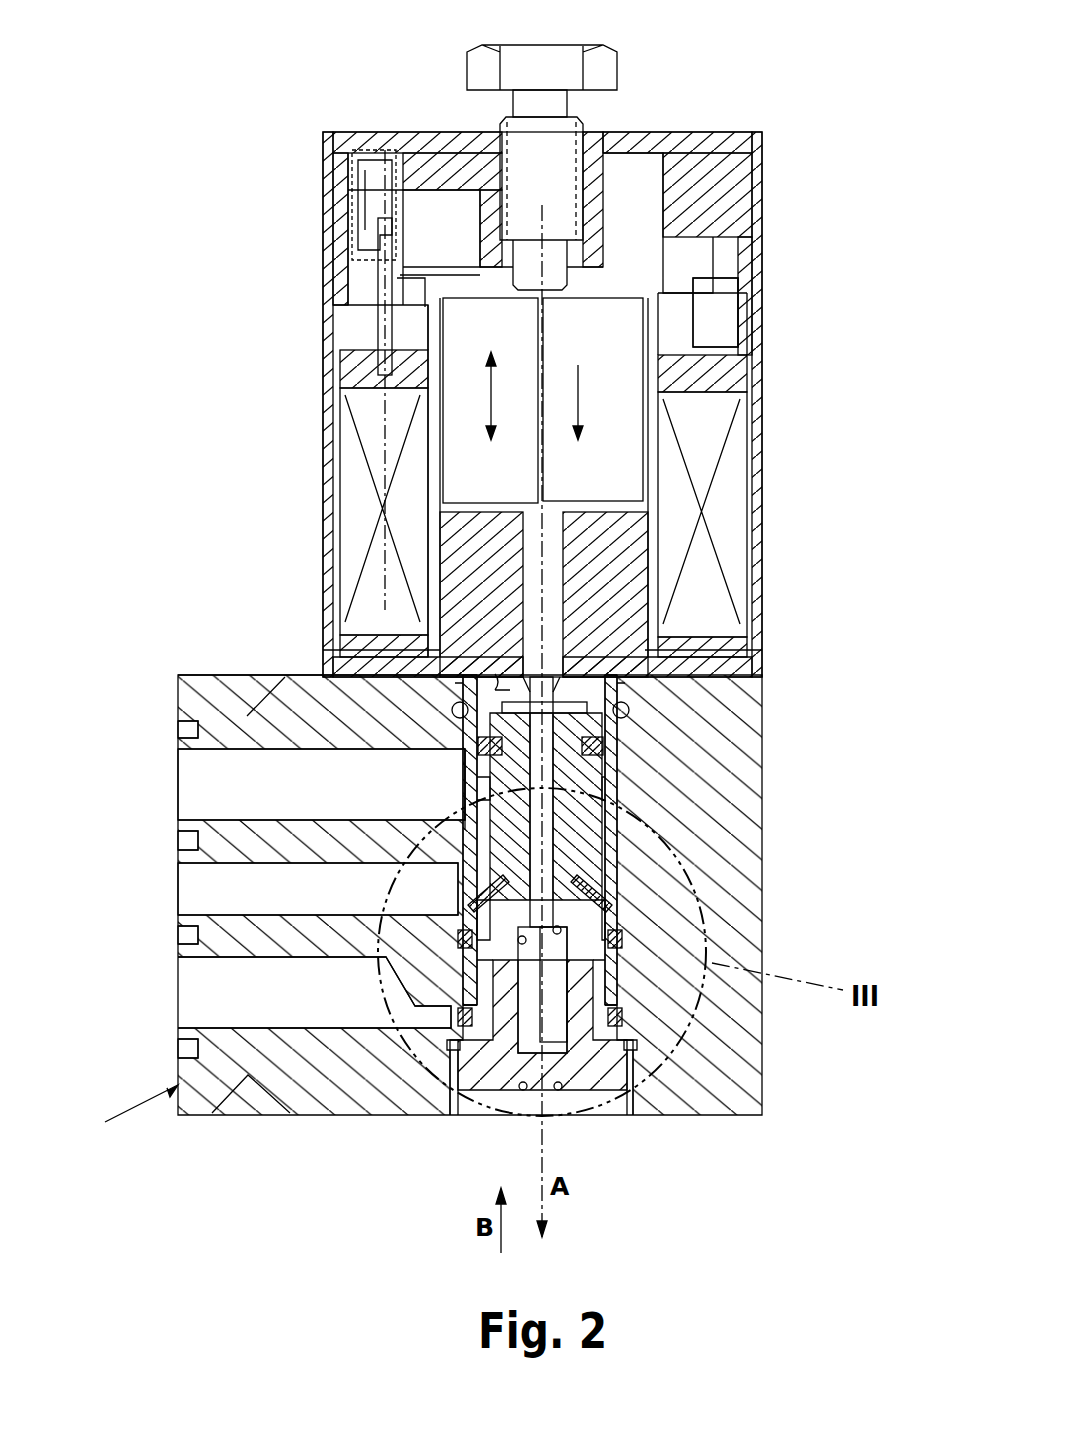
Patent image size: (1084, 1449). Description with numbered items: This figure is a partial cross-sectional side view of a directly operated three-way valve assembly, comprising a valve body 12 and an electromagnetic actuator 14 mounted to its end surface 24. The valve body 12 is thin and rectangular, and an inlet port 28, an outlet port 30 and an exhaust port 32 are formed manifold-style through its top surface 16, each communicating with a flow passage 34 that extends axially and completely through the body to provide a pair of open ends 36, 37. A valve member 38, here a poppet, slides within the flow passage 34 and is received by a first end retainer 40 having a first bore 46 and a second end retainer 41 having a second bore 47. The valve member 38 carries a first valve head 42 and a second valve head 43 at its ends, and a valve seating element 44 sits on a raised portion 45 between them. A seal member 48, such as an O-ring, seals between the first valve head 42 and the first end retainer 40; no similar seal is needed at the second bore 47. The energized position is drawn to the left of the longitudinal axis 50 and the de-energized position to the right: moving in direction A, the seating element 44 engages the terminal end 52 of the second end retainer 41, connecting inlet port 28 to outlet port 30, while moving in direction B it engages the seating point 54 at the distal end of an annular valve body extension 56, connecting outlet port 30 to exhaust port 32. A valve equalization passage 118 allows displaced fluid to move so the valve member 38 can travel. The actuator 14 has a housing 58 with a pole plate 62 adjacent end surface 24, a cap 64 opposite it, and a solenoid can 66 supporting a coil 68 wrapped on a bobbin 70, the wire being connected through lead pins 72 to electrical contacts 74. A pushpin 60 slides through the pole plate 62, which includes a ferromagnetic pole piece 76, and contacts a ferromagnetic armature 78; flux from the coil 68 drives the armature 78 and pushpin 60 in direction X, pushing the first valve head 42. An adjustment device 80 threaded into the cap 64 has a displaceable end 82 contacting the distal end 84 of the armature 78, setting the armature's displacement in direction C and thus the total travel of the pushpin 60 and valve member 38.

The adjustment device 80 is at (607, 65).
The displaceable end 82 is at (551, 262).
The distal end 84 is at (597, 320).
The lead pins 72 is at (360, 170).
The armature 78 is at (745, 182).
The cap 64 is at (748, 213).
The housing 58 is at (745, 262).
The electrical contacts 74 is at (380, 287).
The bobbin 70 is at (735, 372).
The coil 68 is at (700, 448).
The solenoid can 66 is at (760, 497).
The pole piece 76 is at (625, 590).
The electromagnetic actuator 14 is at (778, 606).
The open end 36 is at (497, 690).
The flow passage 34 is at (362, 700).
The end surface 24 is at (292, 675).
The pole plate 62 is at (745, 662).
The pushpin 60 is at (620, 683).
The seating point 54 is at (464, 805).
The valve equalization passage 118 is at (632, 712).
The seal member 48 is at (604, 742).
The inlet port 28 is at (188, 776).
The first end retainer 40 is at (575, 765).
The first bore 46 is at (606, 820).
The first valve head 42 is at (580, 840).
The valve member 38 is at (615, 855).
The outlet port 30 is at (188, 877).
The annular valve body extension 56 is at (600, 880).
The raised portion 45 is at (606, 906).
The exhaust port 32 is at (188, 983).
The second bore 47 is at (622, 1016).
The top surface 16 is at (125, 1115).
The valve body 12 is at (746, 1096).
The valve seating element 44 is at (440, 930).
The terminal end 52 is at (476, 950).
The open end 37 is at (500, 1045).
The longitudinal axis 50 is at (543, 1133).
The second end retainer 41 is at (612, 1108).
The second valve head 43 is at (690, 1108).